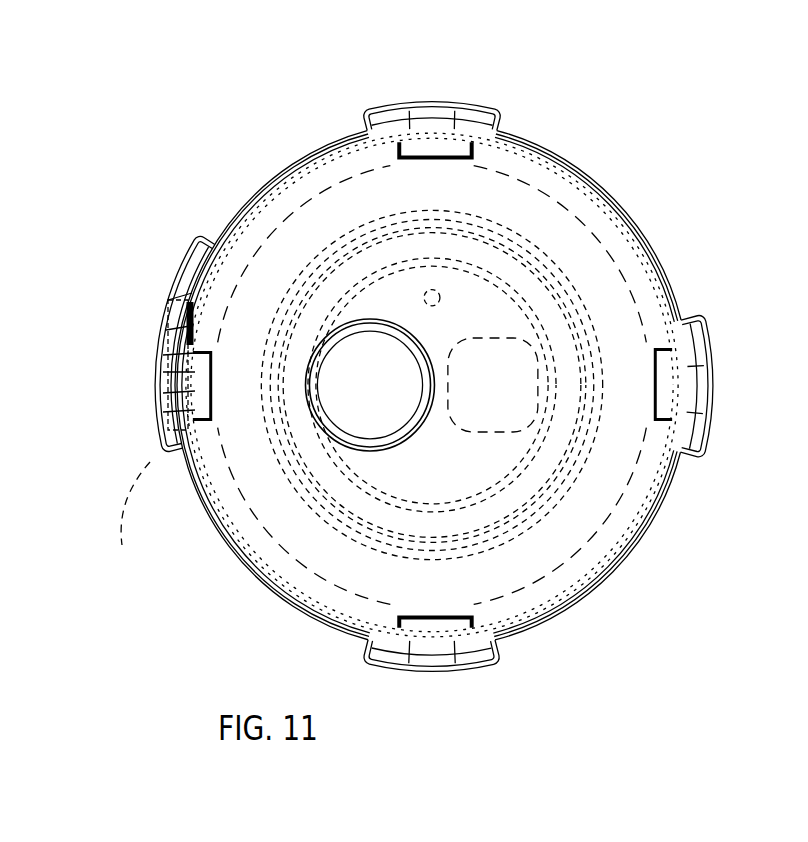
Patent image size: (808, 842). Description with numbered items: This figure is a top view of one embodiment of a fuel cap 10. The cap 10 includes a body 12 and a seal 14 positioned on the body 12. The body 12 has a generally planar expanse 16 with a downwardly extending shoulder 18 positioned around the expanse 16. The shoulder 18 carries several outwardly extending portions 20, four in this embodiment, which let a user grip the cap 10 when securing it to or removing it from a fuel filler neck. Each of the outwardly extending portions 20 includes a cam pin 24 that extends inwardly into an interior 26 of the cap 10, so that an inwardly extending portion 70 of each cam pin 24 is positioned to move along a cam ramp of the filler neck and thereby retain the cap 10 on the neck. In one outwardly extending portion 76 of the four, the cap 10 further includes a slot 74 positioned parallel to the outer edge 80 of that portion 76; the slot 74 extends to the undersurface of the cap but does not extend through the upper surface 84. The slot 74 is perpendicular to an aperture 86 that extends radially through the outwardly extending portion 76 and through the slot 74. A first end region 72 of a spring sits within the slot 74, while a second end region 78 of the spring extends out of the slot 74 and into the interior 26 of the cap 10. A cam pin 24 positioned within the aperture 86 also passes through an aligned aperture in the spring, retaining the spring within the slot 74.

The fuel cap 10 is at (141, 411).
The body 12 is at (598, 187).
The seal 14 is at (652, 206).
The planar expanse 16 is at (623, 342).
The shoulder 18 is at (660, 282).
The outwardly extending portions 20 is at (473, 104).
The cam pin 24 is at (428, 102).
The interior 26 is at (510, 200).
The inwardly extending portion 70 is at (690, 410).
The first end region 72 is at (148, 382).
The slot 74 is at (148, 340).
The outwardly extending portion 76 is at (150, 394).
The second end region 78 is at (431, 384).
The outer edge 80 is at (180, 258).
The upper surface 84 is at (330, 200).
The aperture 86 is at (145, 518).